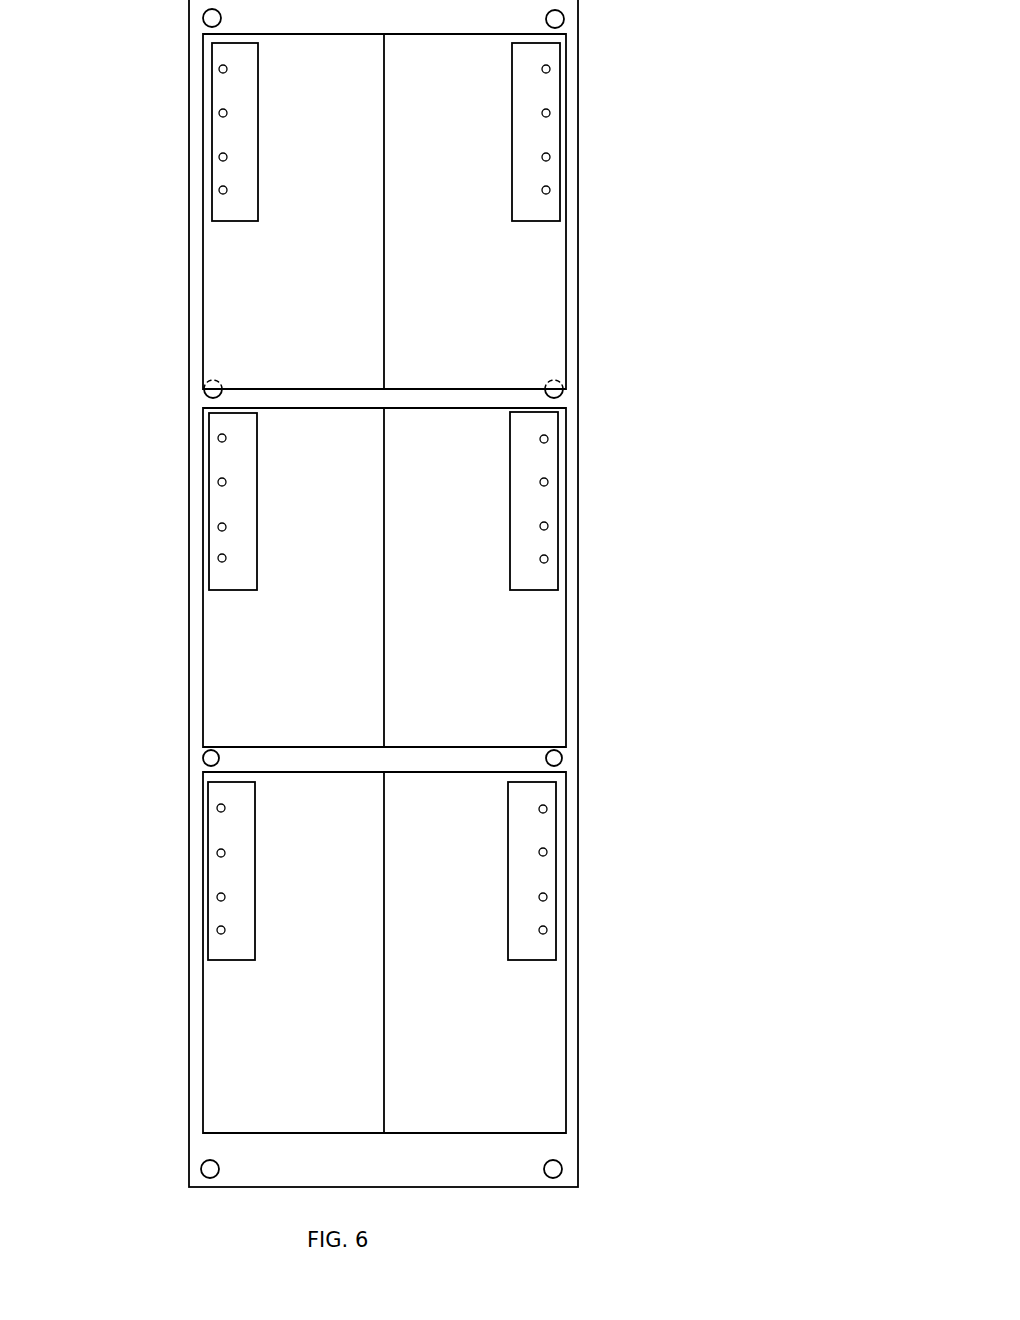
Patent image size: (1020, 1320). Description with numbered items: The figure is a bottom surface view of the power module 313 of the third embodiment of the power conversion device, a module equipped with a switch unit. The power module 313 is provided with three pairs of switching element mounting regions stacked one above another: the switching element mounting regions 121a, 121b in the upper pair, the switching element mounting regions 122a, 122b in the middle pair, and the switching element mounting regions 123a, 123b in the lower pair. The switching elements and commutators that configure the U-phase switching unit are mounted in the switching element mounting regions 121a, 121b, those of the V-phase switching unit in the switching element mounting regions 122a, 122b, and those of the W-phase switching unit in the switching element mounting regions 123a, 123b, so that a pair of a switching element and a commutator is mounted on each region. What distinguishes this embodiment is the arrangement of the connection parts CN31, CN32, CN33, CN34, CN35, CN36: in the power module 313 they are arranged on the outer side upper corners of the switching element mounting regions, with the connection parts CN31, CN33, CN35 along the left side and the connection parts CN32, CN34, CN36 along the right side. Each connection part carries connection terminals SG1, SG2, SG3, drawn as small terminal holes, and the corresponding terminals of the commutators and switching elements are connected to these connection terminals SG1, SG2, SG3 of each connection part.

The power module 313 is at (580, 82).
The switching element mounting region 121a is at (545, 299).
The switching element mounting region 121b is at (225, 299).
The switching element mounting region 122a is at (543, 669).
The switching element mounting region 122b is at (225, 669).
The switching element mounting region 123a is at (542, 1037).
The switching element mounting region 123b is at (225, 1037).
The connection part CN31 is at (225, 212).
The connection part CN32 is at (545, 212).
The connection part CN33 is at (222, 581).
The connection part CN34 is at (542, 580).
The connection part CN35 is at (221, 951).
The connection part CN36 is at (541, 950).
The connection terminal SG1 is at (219, 190).
The connection terminal SG2 is at (219, 157).
The connection terminal SG3 is at (219, 113).